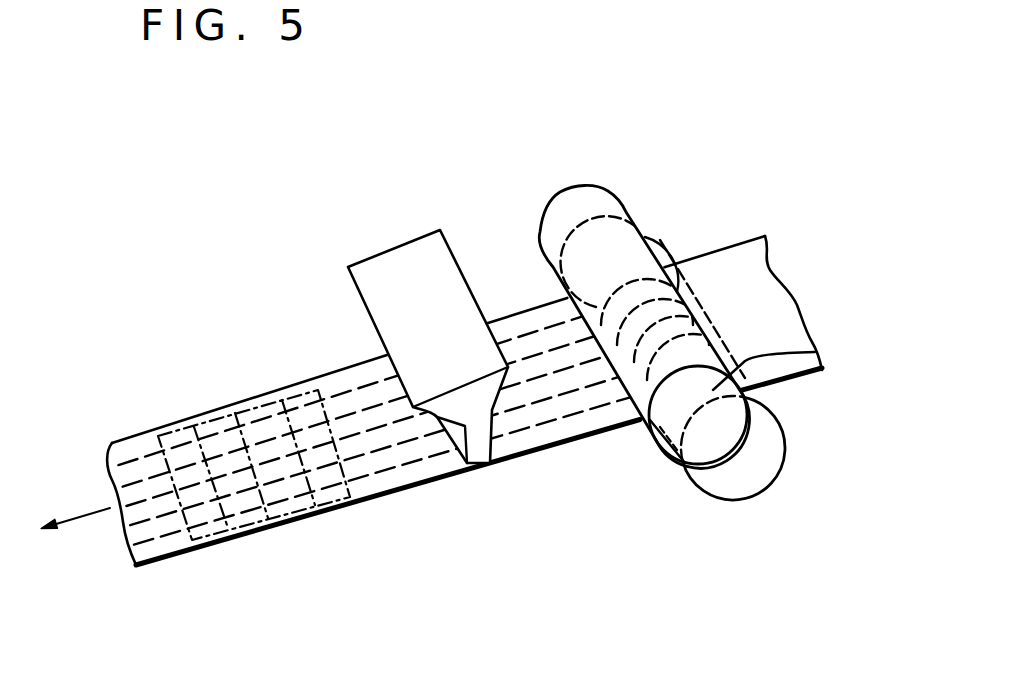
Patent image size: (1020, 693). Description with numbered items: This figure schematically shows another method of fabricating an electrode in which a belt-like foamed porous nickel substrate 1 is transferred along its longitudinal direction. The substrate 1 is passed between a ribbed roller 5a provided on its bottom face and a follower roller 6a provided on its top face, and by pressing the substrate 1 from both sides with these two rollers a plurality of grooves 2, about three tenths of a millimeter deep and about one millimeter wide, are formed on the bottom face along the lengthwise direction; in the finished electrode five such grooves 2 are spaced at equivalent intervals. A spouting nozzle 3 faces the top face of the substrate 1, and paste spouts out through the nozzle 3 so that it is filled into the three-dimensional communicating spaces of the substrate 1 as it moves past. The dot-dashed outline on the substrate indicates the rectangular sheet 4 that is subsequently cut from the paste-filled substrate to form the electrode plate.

The porous nickel substrate 1 is at (738, 265).
The grooves 2 is at (548, 425).
The spouting nozzle 3 is at (396, 266).
The cut rectangular sheet 4 is at (323, 497).
The ribbed roller 5a is at (762, 473).
The follower roller 6a is at (815, 352).